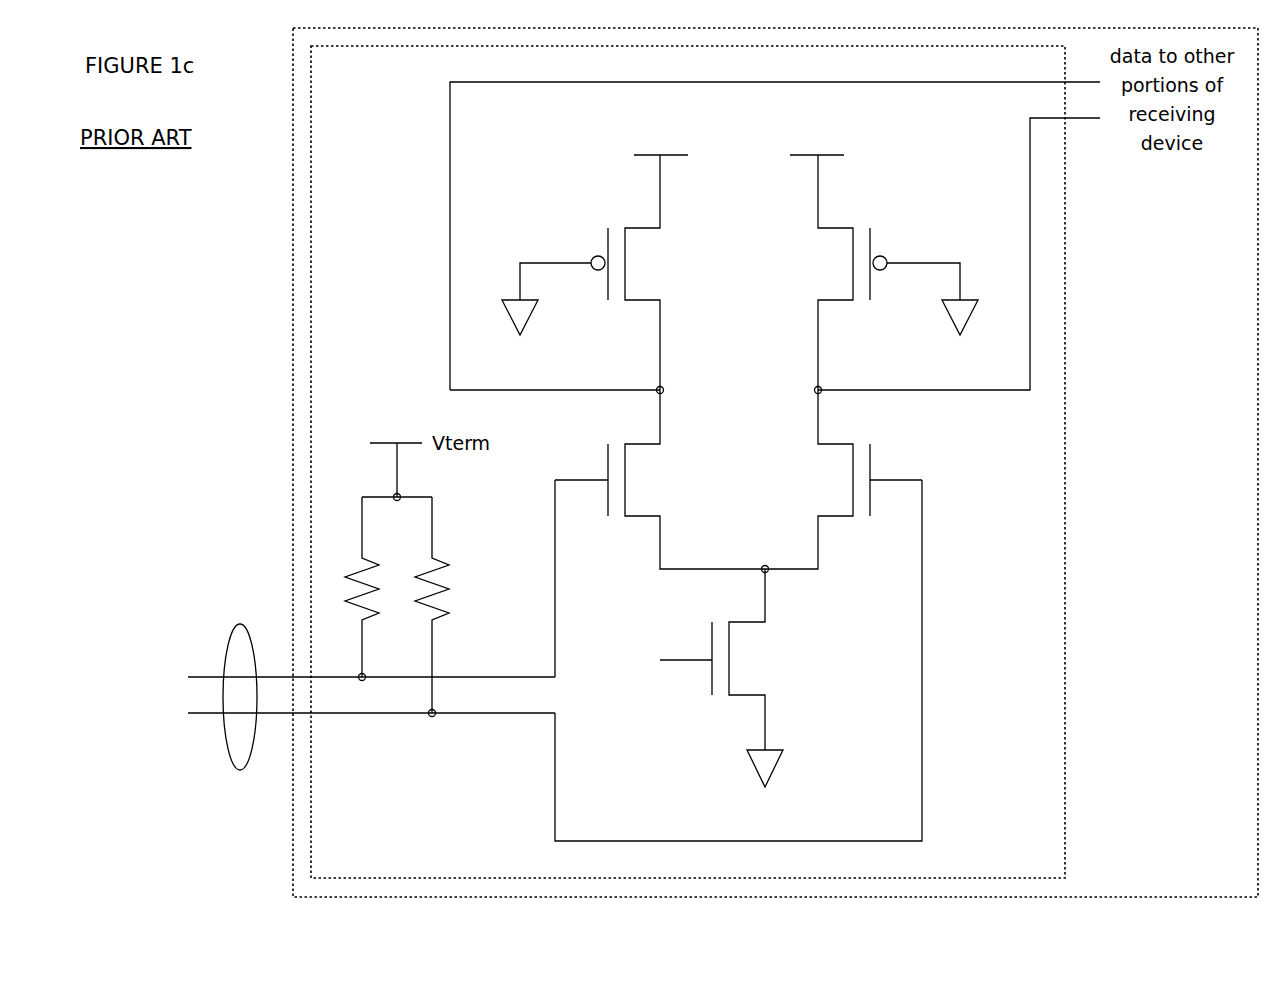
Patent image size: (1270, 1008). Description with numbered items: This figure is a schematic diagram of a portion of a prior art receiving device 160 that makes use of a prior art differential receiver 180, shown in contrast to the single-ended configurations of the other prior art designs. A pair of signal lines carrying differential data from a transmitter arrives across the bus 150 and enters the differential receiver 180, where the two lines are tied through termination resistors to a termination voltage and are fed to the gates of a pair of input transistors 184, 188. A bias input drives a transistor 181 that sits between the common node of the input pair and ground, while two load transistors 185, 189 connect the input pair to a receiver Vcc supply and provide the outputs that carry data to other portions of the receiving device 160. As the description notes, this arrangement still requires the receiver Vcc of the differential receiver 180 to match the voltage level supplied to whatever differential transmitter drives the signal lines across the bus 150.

The bus 150 is at (240, 623).
The receiving device 160 is at (775, 462).
The differential receiver 180 is at (688, 462).
The bias transistor 181 is at (696, 678).
The NMOS input transistor 184 is at (660, 479).
The PMOS load transistor 185 is at (595, 261).
The NMOS input transistor 188 is at (843, 479).
The PMOS load transistor 189 is at (884, 261).